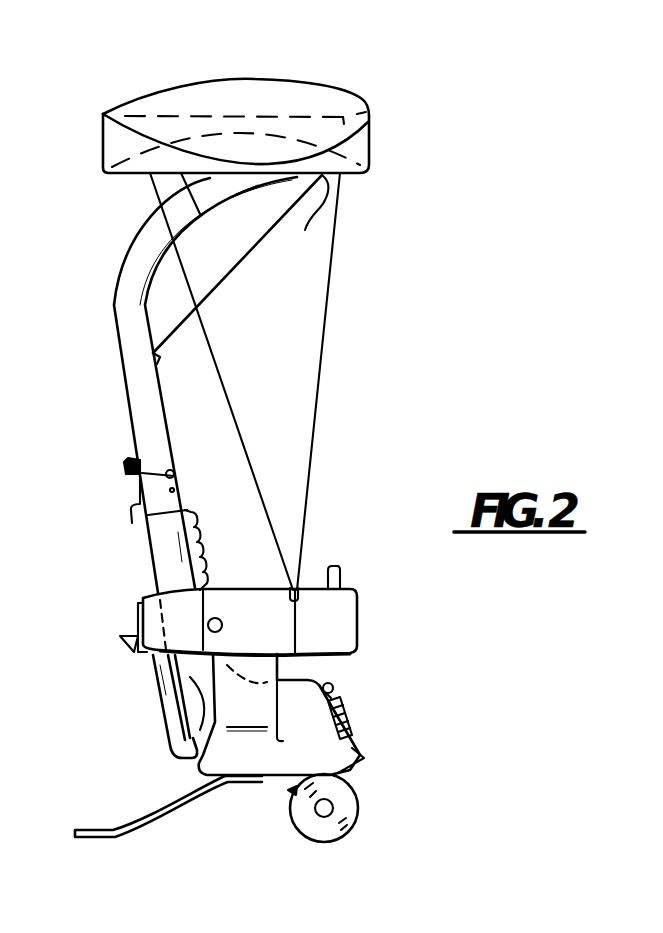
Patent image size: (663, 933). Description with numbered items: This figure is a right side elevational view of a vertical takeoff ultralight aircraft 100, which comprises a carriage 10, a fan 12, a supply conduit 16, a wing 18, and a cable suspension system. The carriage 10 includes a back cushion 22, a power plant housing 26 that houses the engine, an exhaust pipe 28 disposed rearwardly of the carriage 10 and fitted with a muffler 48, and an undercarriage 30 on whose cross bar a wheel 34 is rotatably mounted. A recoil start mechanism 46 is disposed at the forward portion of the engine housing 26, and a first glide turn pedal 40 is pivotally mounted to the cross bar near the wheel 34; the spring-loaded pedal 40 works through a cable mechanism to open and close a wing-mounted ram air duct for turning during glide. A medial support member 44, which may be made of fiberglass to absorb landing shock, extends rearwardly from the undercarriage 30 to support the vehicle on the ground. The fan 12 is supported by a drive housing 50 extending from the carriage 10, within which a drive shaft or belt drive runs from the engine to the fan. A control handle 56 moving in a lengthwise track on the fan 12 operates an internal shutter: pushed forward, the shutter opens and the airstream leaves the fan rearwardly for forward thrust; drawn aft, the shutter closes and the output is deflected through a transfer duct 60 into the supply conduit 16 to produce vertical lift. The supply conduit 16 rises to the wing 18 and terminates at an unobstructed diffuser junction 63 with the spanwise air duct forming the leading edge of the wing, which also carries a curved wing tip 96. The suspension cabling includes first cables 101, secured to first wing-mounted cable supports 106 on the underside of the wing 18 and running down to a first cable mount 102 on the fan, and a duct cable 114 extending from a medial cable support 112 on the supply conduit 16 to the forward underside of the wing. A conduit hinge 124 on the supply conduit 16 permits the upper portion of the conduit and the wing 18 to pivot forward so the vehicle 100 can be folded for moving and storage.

The carriage 10 is at (158, 772).
The fan 12 is at (360, 618).
The supply conduit 16 is at (127, 393).
The wing 18 is at (196, 62).
The back cushion 22 is at (200, 543).
The power plant housing 26 is at (352, 713).
The exhaust pipe 28 is at (127, 642).
The undercarriage 30 is at (265, 805).
The wheel 34 is at (358, 800).
The first glide turn pedal 40 is at (362, 766).
The medial support member 44 is at (83, 836).
The recoil start mechanism 46 is at (334, 686).
The muffler 48 is at (158, 714).
The drive housing 50 is at (243, 718).
The control handle 56 is at (343, 570).
The transfer duct 60 is at (155, 548).
The diffuser junction 63 is at (234, 193).
The curved wing tip 96 is at (371, 119).
The vertical takeoff ultralight aircraft 100 is at (126, 587).
The first cables 101 is at (232, 396).
The first cable mount 102 is at (310, 588).
The first wing-mounted cable support 106 is at (303, 219).
The medial cable support 112 is at (157, 364).
The duct cable 114 is at (240, 273).
The conduit hinge 124 is at (175, 471).